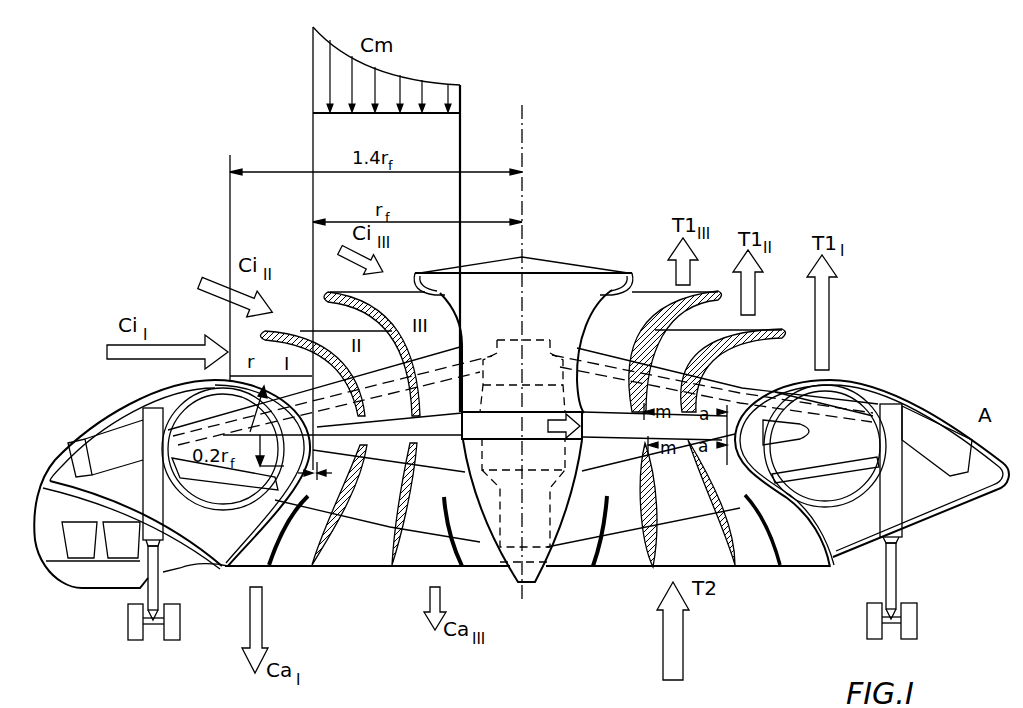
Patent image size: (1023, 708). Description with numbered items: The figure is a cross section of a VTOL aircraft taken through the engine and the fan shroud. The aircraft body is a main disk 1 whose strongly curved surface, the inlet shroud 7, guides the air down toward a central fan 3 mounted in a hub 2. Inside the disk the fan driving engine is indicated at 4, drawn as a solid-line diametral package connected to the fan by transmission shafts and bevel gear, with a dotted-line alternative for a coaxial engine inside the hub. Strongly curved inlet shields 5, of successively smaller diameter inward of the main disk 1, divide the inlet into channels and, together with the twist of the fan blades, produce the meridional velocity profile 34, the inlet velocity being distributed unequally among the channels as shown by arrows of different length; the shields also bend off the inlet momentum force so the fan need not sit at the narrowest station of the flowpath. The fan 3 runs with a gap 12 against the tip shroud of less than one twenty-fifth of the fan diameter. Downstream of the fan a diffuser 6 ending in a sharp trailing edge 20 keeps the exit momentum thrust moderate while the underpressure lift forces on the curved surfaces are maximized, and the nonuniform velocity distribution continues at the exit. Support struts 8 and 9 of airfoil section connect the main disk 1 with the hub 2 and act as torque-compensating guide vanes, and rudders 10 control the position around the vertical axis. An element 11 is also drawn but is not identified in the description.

The main disk 1 is at (886, 392).
The hub 2 is at (590, 292).
The fan 3 is at (602, 440).
The driving engine arrangement 4 is at (510, 537).
The inlet shields 5 is at (290, 330).
The diffuser 6 is at (280, 522).
The inlet shroud 7 is at (186, 385).
The support strut 8 is at (742, 386).
The support strut 9 is at (728, 488).
The rudders 10 is at (768, 503).
The control flap 11 is at (640, 486).
The gap 12 is at (322, 478).
The sharp trailing edge 20 is at (224, 578).
The meridional velocity profile 34 is at (445, 86).